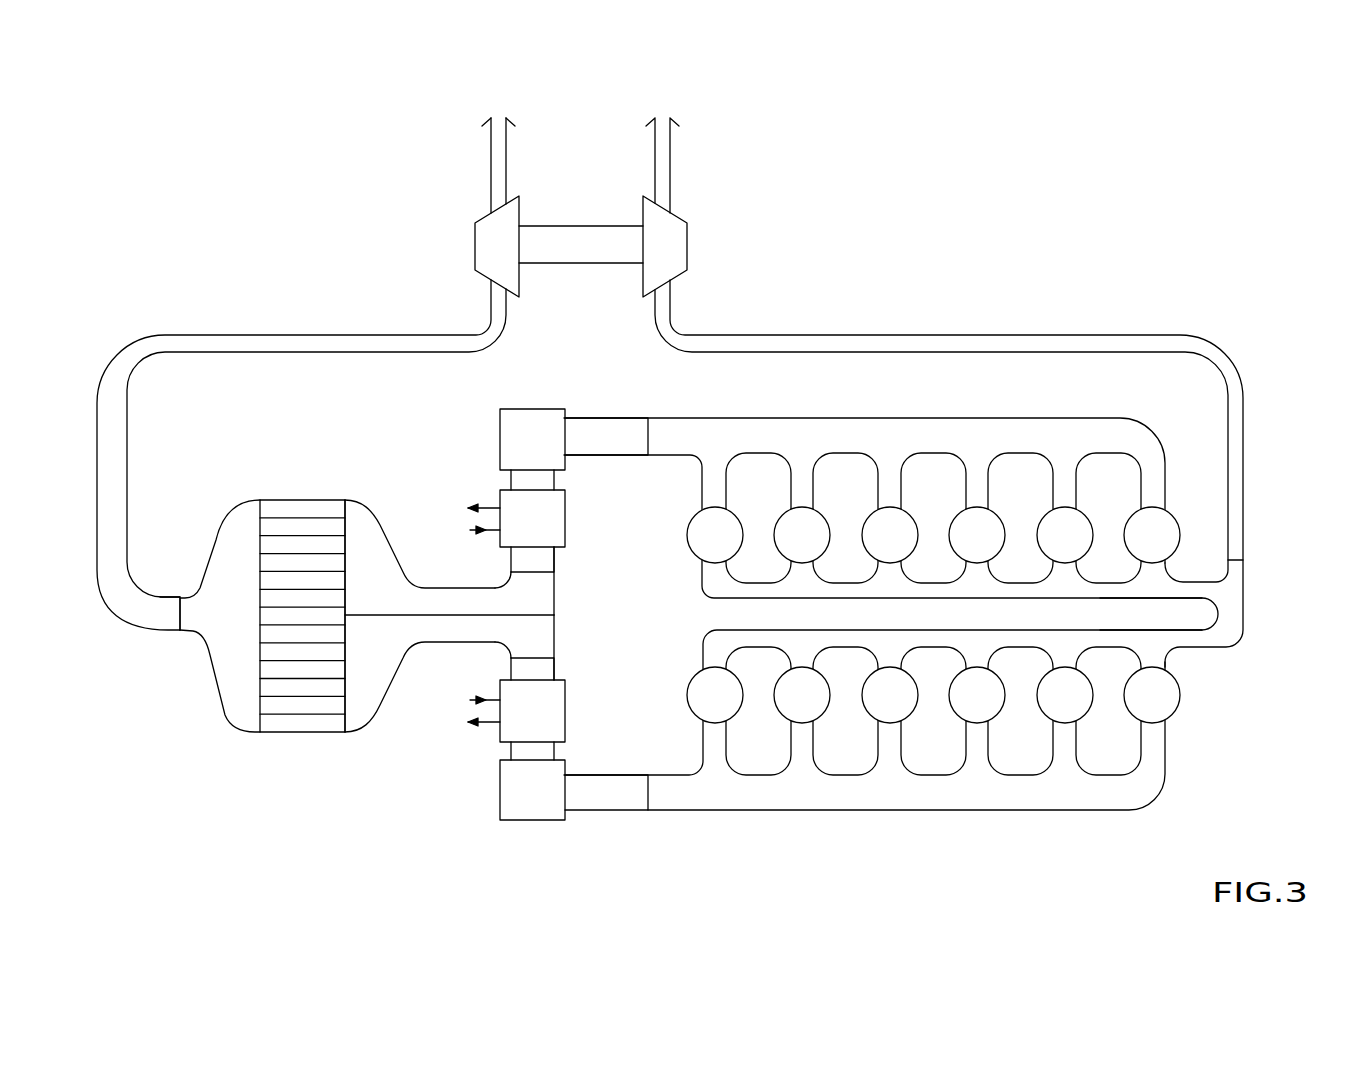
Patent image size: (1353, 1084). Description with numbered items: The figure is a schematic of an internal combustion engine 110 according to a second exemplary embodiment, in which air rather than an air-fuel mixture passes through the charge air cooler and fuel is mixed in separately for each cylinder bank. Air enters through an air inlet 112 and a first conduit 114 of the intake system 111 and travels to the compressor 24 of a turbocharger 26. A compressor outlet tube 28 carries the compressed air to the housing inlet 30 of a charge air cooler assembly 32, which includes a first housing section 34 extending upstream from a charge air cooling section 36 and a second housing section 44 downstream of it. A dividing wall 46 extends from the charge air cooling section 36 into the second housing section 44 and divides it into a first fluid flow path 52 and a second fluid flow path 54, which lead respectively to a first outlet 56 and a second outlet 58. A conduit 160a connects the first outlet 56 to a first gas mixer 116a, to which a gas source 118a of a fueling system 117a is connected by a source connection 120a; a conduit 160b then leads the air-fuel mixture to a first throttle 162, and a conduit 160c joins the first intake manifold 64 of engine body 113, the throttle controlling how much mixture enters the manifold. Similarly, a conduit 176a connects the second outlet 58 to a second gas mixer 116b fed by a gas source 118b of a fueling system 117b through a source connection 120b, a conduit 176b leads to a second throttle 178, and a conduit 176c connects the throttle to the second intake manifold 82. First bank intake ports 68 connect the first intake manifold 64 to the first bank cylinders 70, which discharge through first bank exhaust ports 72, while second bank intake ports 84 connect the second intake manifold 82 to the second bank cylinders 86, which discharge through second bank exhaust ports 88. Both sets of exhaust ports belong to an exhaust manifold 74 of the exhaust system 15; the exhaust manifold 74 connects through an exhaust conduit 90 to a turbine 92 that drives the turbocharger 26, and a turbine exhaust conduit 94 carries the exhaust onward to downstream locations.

The exhaust system 15 is at (1257, 547).
The compressor 24 is at (475, 243).
The turbocharger 26 is at (569, 272).
The compressor outlet tube 28 is at (127, 470).
The housing inlet 30 is at (165, 627).
The charge air cooler assembly 32 is at (374, 654).
The first housing section 34 is at (218, 700).
The charge air cooling section 36 is at (345, 687).
The second housing section 44 is at (372, 510).
The dividing wall 46 is at (447, 613).
The first fluid flow path 52 is at (385, 583).
The second fluid flow path 54 is at (390, 659).
The first outlet 56 is at (540, 572).
The second outlet 58 is at (540, 658).
The first intake manifold 64 is at (822, 437).
The first bank intake ports 68 is at (802, 485).
The first bank cylinders 70 is at (814, 549).
The first bank exhaust ports 72 is at (805, 570).
The exhaust manifold 74 is at (1230, 635).
The second intake manifold 82 is at (850, 795).
The second bank intake ports 84 is at (888, 742).
The second bank cylinders 86 is at (989, 709).
The second bank exhaust ports 88 is at (890, 662).
The exhaust conduit 90 is at (1243, 413).
The turbine 92 is at (687, 250).
The turbine exhaust conduit 94 is at (670, 163).
The internal combustion engine 110 is at (983, 210).
The intake system 111 is at (180, 312).
The air inlet 112 is at (497, 110).
The engine body 113 is at (955, 827).
The first conduit 114 is at (491, 168).
The first gas mixer 116a is at (553, 523).
The second gas mixer 116b is at (553, 708).
The first fueling system 117a is at (430, 465).
The second fueling system 117b is at (413, 793).
The first gas source 118a is at (463, 518).
The second gas source 118b is at (463, 722).
The first source connection 120a is at (482, 530).
The second source connection 120b is at (485, 700).
The conduit 160a is at (545, 562).
The first source output conduit 160b is at (545, 480).
The conduit 160c is at (600, 433).
The first throttle 162 is at (549, 455).
The conduit 176a is at (548, 672).
The second source output conduit 176b is at (553, 748).
The conduit 176c is at (603, 797).
The second throttle 178 is at (549, 805).